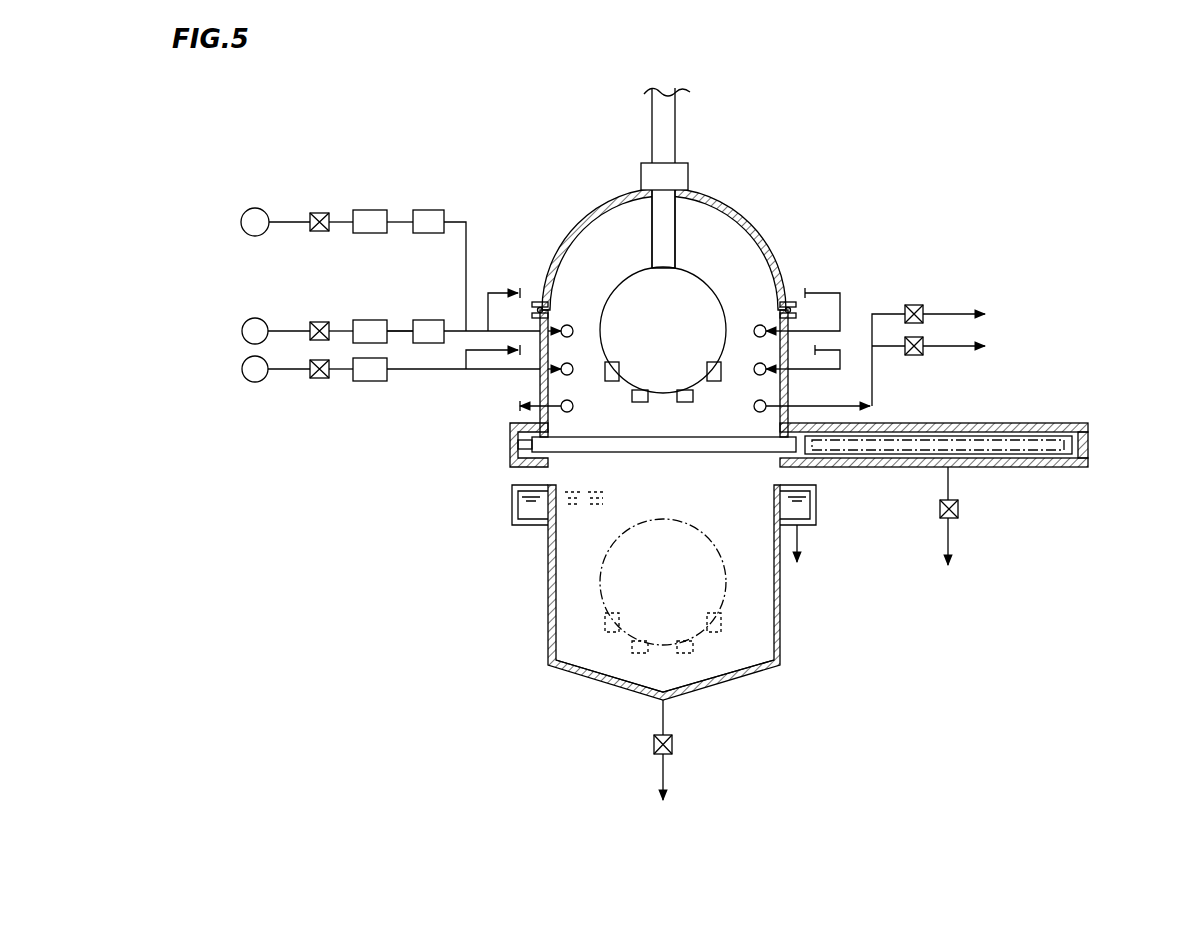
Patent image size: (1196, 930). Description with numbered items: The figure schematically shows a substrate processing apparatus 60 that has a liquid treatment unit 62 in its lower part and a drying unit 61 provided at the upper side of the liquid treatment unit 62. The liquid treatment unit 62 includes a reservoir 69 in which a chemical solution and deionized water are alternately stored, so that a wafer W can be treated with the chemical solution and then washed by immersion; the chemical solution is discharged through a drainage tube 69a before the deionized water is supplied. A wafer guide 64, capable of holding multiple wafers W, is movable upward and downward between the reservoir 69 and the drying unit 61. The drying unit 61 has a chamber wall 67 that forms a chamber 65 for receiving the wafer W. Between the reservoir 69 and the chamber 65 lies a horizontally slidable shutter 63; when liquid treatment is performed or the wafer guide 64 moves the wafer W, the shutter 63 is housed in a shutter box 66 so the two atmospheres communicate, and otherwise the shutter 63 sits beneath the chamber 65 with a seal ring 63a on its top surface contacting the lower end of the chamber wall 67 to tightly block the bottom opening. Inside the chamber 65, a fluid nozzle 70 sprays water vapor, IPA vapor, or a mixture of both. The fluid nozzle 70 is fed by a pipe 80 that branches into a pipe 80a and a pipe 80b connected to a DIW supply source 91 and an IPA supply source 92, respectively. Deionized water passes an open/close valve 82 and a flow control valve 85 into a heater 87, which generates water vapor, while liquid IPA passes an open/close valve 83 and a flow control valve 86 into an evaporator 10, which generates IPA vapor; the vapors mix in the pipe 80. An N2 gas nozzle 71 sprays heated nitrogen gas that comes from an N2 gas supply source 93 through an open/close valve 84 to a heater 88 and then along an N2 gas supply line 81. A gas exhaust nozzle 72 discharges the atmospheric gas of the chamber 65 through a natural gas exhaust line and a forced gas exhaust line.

The substrate processing apparatus 60 is at (832, 172).
The drying unit 61 is at (740, 205).
The liquid treatment unit 62 is at (530, 576).
The shutter 63 is at (686, 440).
The seal ring 63a is at (520, 445).
The wafer guide 64 is at (640, 405).
The chamber 65 is at (742, 250).
The shutter box 66 is at (1020, 423).
The chamber wall 67 is at (600, 207).
The reservoir 69 is at (548, 640).
The drainage tube 69a is at (665, 717).
The fluid nozzle 70 is at (573, 327).
The N2 gas nozzle 71 is at (570, 378).
The gas exhaust nozzle 72 is at (540, 395).
The pipe 80 is at (484, 331).
The pipe 80a is at (466, 222).
The pipe 80b is at (400, 332).
The N2 gas supply line 81 is at (450, 371).
The open/close valve 82 is at (319, 212).
The open/close valve 83 is at (319, 322).
The open/close valve 84 is at (320, 380).
The flow control valve 85 is at (371, 210).
The flow control valve 86 is at (371, 320).
The heater 87 is at (432, 210).
The heater 88 is at (370, 382).
The DIW supply source 91 is at (255, 208).
The IPA supply source 92 is at (255, 318).
The N2 gas supply source 93 is at (255, 384).
The evaporator 10 is at (432, 320).
The wafer W is at (632, 286).